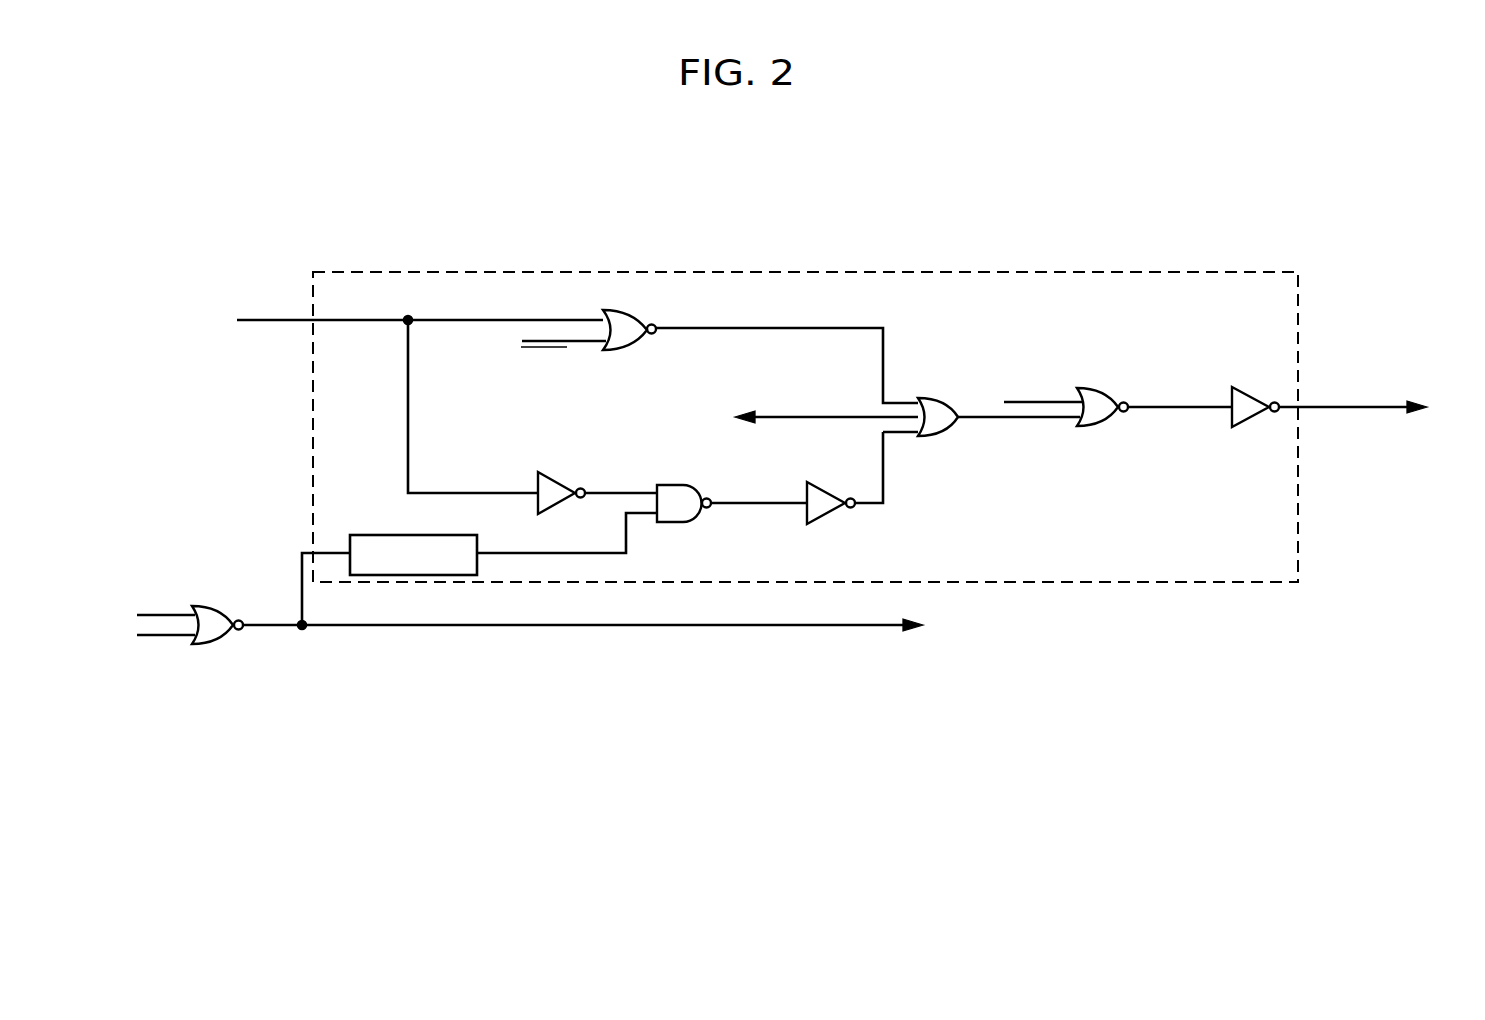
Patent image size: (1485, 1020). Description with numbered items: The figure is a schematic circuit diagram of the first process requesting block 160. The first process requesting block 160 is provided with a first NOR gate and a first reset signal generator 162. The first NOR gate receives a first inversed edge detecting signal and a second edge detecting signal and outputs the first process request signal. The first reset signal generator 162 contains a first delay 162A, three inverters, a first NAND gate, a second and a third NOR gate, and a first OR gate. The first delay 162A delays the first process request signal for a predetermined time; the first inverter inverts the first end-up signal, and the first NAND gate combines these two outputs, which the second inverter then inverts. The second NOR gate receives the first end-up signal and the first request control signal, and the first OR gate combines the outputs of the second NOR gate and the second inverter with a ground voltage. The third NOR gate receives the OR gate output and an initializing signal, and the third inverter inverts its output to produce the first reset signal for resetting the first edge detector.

The first process requesting block 160 is at (1307, 213).
The first reset signal generator 162 is at (1165, 272).
The first delay 162A is at (437, 535).